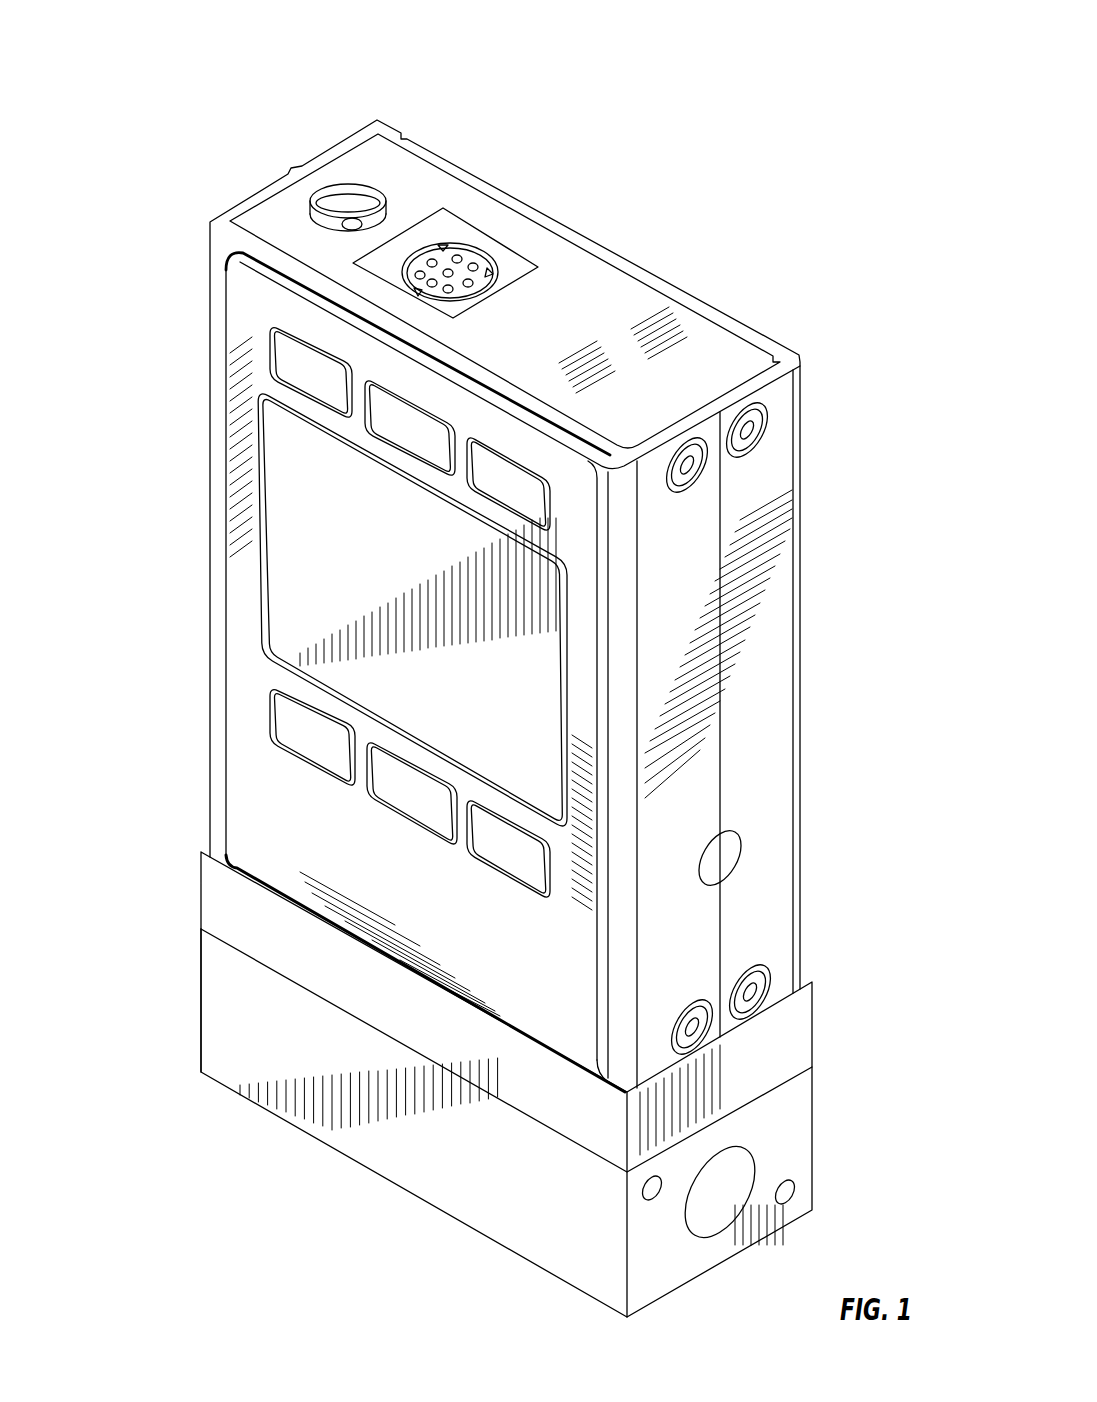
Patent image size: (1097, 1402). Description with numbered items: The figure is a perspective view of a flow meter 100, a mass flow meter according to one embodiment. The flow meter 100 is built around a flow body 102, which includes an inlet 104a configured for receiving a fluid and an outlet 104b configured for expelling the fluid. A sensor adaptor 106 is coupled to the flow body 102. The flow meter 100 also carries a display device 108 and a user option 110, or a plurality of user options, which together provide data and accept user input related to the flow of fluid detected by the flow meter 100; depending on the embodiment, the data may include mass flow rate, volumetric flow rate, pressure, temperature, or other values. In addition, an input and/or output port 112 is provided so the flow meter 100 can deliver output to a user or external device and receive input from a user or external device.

The flow meter 100 is at (900, 118).
The flow body 102 is at (210, 1130).
The inlet 104a is at (760, 1178).
The outlet 104b is at (178, 968).
The sensor adaptor 106 is at (845, 992).
The display device 108 is at (590, 690).
The user option 110 is at (240, 369).
The input and/or output port 112 is at (518, 232).